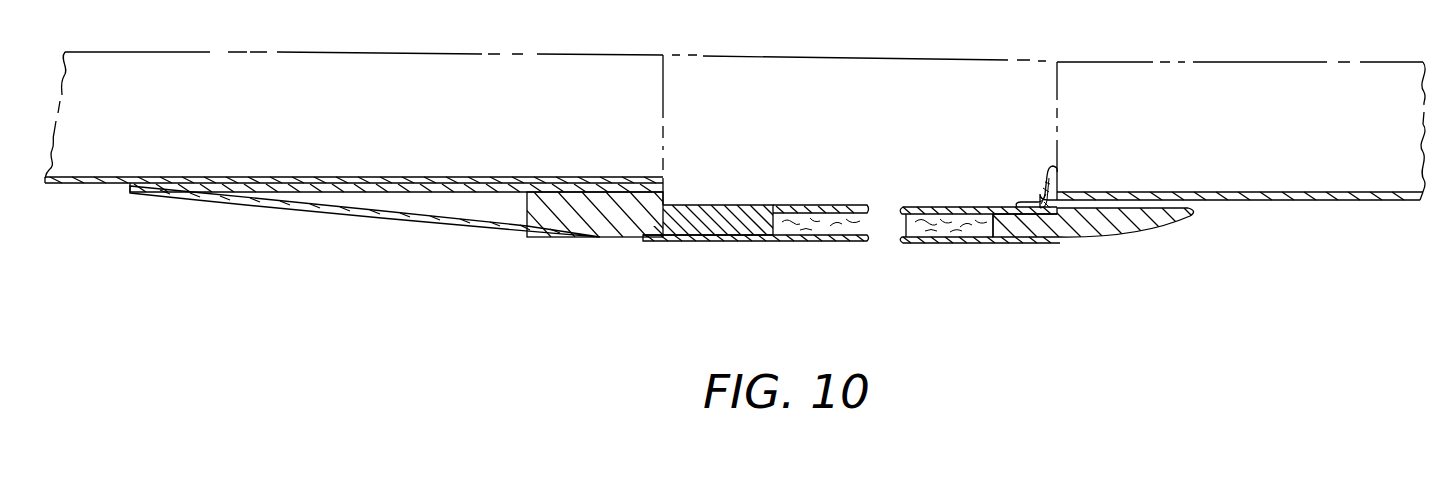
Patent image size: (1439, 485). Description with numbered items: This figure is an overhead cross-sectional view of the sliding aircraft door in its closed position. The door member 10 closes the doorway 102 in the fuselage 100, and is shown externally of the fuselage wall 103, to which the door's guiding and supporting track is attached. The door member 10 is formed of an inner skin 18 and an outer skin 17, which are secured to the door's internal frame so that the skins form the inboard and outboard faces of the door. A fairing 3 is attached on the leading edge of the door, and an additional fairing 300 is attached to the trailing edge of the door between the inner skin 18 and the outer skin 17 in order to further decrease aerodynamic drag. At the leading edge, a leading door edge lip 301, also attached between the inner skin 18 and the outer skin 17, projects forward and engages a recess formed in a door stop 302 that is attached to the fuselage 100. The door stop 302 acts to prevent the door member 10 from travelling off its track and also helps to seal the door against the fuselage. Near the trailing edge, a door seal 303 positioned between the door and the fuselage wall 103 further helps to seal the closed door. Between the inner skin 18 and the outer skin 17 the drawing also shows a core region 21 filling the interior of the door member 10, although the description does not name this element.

The fairing 3 is at (388, 205).
The door member 10 is at (954, 247).
The outer skin 17 is at (824, 242).
The inner skin 18 is at (805, 204).
The foam core 21 is at (923, 228).
The fuselage 100 is at (1335, 92).
The doorway 102 is at (955, 88).
The fuselage wall 103 is at (1277, 202).
The additional fairing 300 is at (1101, 225).
The leading door edge lip 301 is at (685, 228).
The door stop 302 is at (625, 219).
The door seal 303 is at (1027, 204).